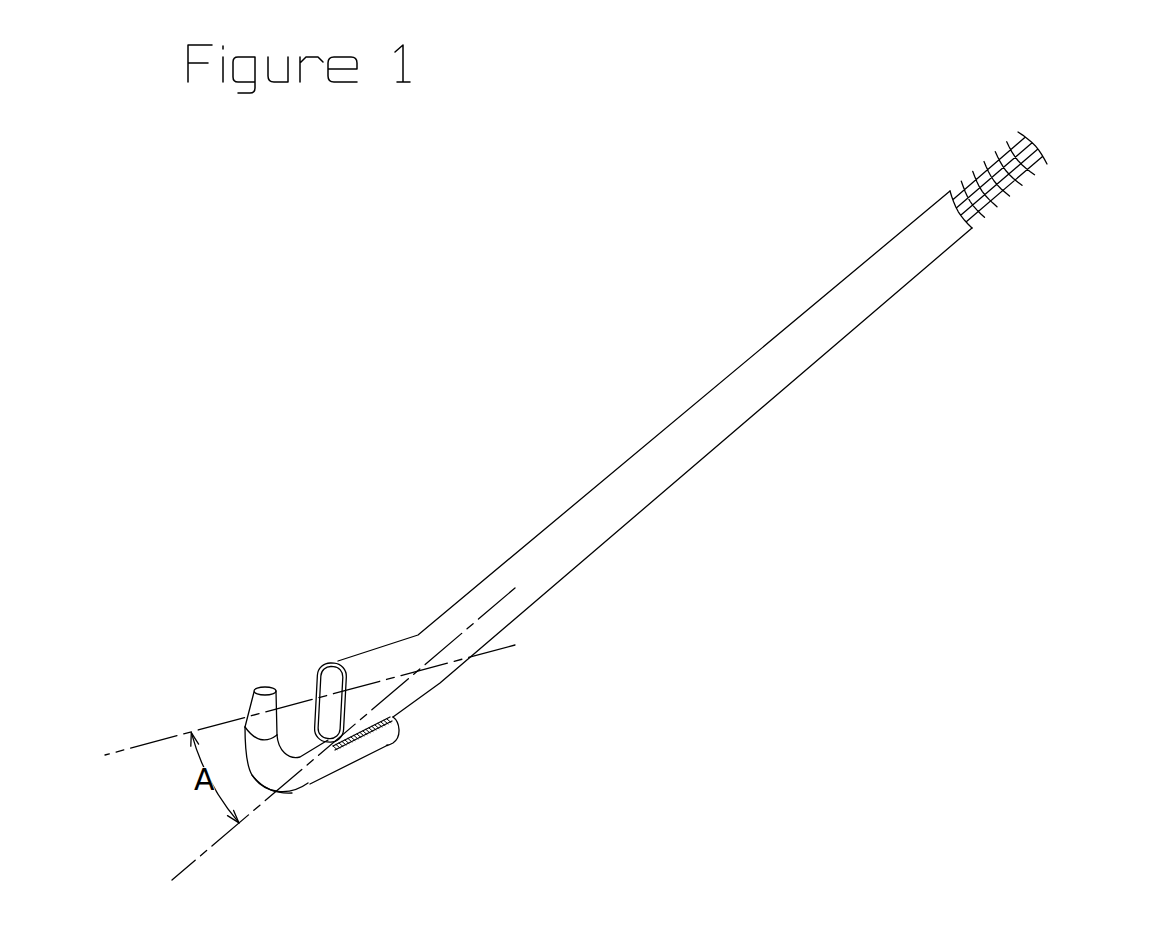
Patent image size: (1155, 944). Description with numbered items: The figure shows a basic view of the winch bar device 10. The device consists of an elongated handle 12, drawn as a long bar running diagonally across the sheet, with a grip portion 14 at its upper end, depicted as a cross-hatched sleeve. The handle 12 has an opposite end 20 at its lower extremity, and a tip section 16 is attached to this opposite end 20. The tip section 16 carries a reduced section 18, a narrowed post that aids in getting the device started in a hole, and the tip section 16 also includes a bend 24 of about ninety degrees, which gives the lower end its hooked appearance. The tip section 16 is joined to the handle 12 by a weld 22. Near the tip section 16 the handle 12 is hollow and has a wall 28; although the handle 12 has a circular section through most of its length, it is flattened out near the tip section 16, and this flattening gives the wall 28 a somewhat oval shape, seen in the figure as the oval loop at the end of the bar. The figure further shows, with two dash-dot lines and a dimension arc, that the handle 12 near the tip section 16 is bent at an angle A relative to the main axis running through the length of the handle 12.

The winch bar device 10 is at (985, 348).
The elongated handle 12 is at (690, 433).
The grip portion 14 is at (993, 207).
The tip section 16 is at (384, 731).
The reduced section 18 is at (247, 713).
The opposite end 20 is at (392, 733).
The weld 22 is at (340, 717).
The bend 24 is at (272, 790).
The wall 28 is at (429, 680).